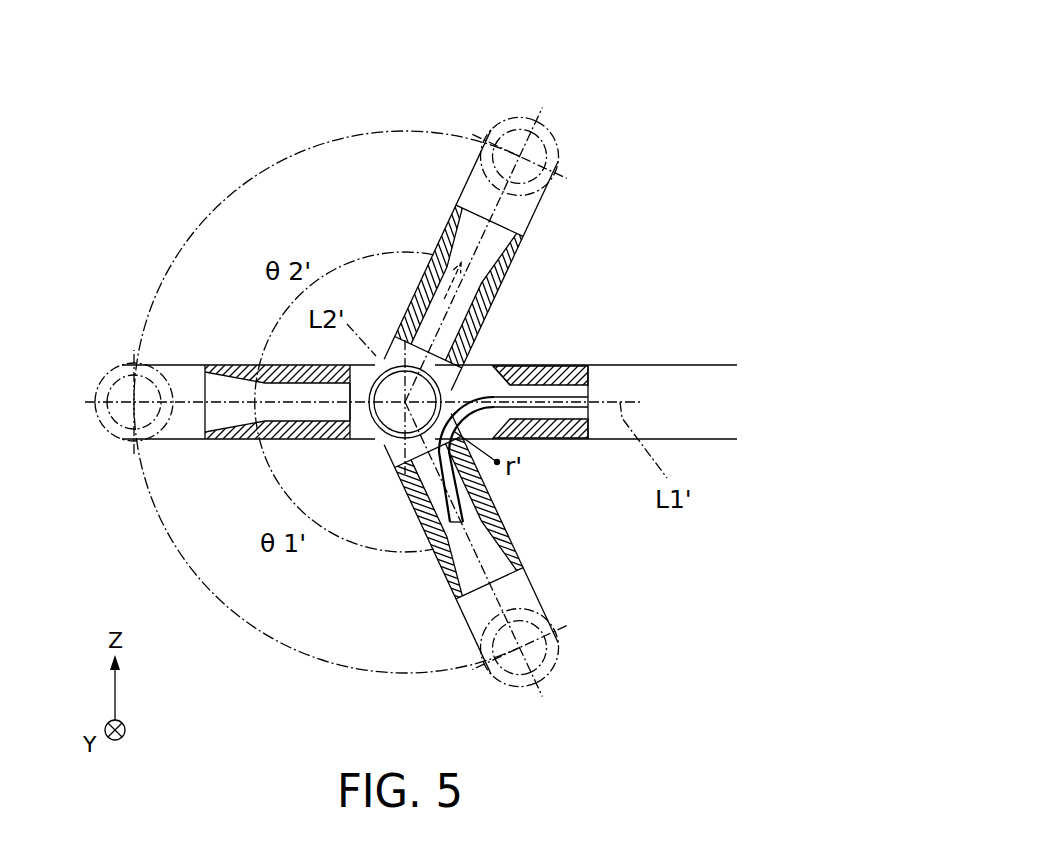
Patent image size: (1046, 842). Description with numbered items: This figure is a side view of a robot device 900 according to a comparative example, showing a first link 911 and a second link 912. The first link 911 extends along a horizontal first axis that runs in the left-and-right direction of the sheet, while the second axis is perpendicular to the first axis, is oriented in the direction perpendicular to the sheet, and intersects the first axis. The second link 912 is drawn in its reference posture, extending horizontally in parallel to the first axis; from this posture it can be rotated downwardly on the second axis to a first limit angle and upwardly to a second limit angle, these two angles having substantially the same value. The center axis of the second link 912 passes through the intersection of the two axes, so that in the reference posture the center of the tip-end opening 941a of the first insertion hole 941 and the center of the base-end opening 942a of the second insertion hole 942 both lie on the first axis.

The robot device 900 is at (644, 148).
The first link 911 is at (690, 365).
The second link 912 is at (460, 634).
The first insertion hole 941 is at (572, 365).
The tip-end opening 941a is at (490, 366).
The second insertion hole 942 is at (222, 364).
The base-end opening 942a is at (362, 440).